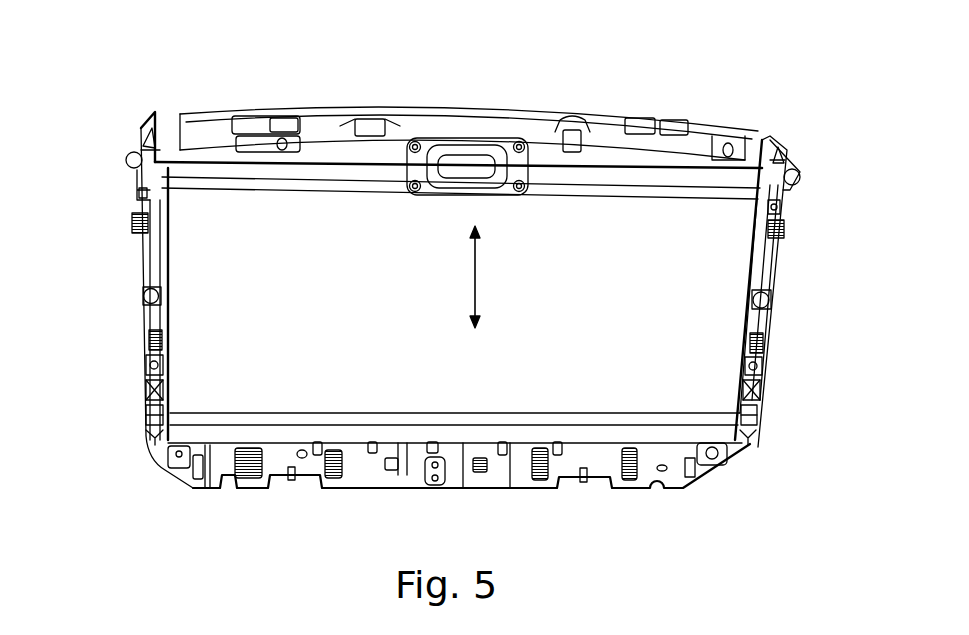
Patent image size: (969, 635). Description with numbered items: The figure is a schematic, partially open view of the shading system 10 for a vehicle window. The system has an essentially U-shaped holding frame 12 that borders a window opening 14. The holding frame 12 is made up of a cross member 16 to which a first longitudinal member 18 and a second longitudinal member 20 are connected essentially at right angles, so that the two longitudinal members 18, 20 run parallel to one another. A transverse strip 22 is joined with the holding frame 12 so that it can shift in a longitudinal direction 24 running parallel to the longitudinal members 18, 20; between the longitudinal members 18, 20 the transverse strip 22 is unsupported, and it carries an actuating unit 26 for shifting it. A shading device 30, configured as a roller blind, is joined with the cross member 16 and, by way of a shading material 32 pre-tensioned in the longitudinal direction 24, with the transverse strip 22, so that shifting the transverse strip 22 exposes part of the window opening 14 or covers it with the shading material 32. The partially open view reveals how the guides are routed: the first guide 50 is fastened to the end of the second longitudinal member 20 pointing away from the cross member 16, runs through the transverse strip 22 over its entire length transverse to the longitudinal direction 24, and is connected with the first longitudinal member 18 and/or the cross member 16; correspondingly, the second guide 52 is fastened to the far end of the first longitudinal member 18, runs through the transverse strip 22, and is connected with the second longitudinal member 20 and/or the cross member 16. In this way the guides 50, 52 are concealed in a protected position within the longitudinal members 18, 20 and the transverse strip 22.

The shading system 10 is at (206, 94).
The holding frame 12 is at (366, 475).
The window opening 14 is at (477, 387).
The cross member 16 is at (205, 486).
The first longitudinal member 18 is at (143, 269).
The second longitudinal member 20 is at (771, 298).
The transverse strip 22 is at (540, 128).
The longitudinal direction 24 is at (473, 272).
The actuating unit 26 is at (455, 147).
The shading device 30 is at (698, 438).
The shading material 32 is at (591, 337).
The first guide 50 is at (770, 135).
The second guide 52 is at (145, 128).